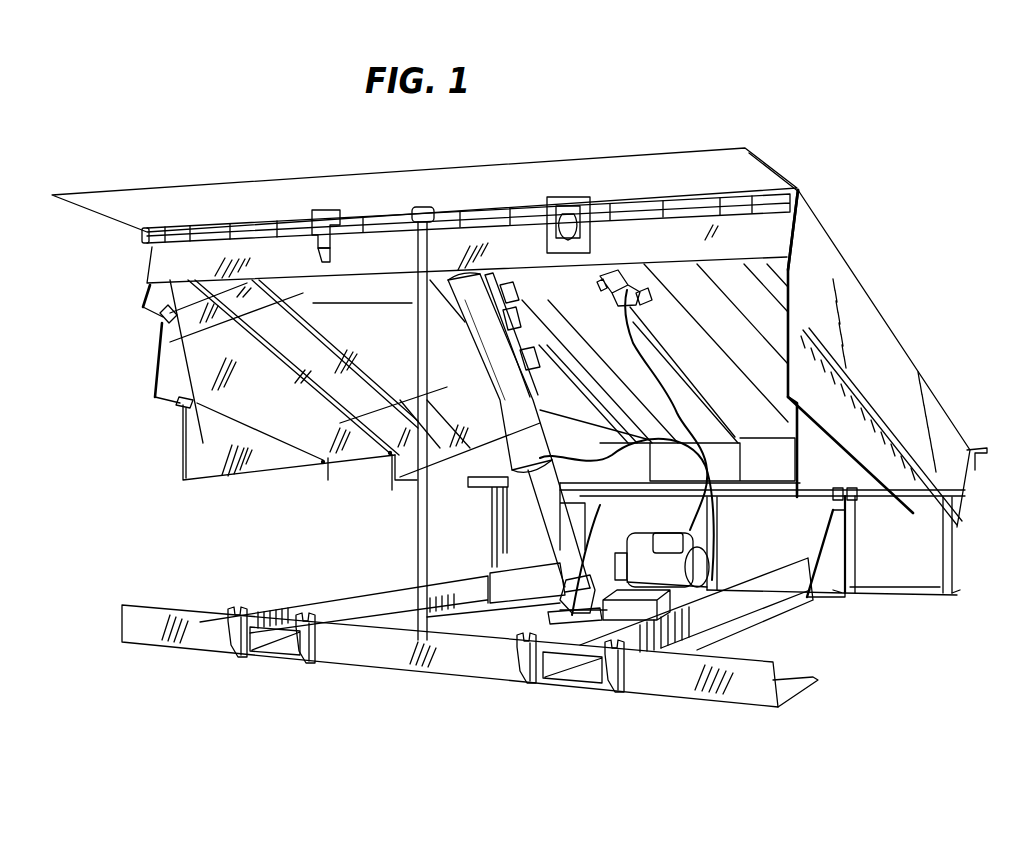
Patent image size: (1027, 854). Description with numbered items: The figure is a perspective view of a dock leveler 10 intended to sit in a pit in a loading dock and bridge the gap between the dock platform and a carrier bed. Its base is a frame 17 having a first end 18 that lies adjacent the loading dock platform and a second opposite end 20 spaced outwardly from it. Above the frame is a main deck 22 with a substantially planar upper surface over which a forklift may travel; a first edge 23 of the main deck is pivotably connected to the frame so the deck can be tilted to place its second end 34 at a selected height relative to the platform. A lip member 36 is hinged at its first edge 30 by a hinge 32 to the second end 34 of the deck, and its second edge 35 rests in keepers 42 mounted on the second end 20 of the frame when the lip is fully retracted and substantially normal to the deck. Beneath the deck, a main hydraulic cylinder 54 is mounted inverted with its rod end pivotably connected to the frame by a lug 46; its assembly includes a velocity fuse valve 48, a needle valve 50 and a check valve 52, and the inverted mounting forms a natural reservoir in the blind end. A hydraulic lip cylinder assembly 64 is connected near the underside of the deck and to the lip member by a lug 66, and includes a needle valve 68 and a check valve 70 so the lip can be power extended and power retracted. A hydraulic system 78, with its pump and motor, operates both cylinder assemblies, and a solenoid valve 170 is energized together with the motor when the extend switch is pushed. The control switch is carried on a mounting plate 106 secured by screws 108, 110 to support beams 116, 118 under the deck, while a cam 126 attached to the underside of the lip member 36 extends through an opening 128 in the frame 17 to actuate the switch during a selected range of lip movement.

The dock leveler 10 is at (535, 433).
The frame 17 is at (732, 622).
The first end 18 is at (958, 560).
The second opposite end 20 is at (767, 708).
The main deck 22 is at (890, 330).
The first edge 23 is at (970, 448).
The first edge 30 is at (800, 188).
The hinge 32 is at (145, 237).
The second end 34 is at (807, 190).
The second edge 35 is at (747, 148).
The lip member 36 is at (775, 162).
The keepers 42 is at (602, 670).
The lug 46 is at (540, 612).
The velocity fuse valve 48 is at (418, 322).
The needle valve 50 is at (520, 330).
The check valve 52 is at (553, 338).
The main hydraulic cylinder 54 is at (510, 413).
The hydraulic lip cylinder assembly 64 is at (627, 277).
The lug 66 is at (570, 230).
The needle valve 68 is at (665, 297).
The check valve 70 is at (664, 266).
The hydraulic system 78 is at (700, 568).
The mounting plate 106 is at (177, 330).
The screw 108 is at (373, 283).
The screw 110 is at (373, 293).
The support beam 116 is at (413, 363).
The support beam 118 is at (357, 347).
The cam 126 is at (338, 212).
The opening 128 is at (330, 267).
The solenoid valve 170 is at (500, 373).